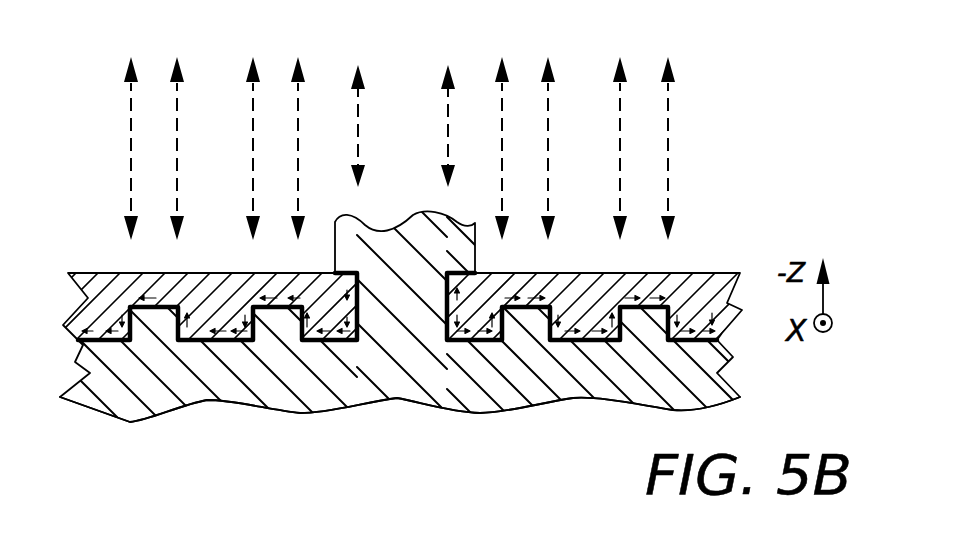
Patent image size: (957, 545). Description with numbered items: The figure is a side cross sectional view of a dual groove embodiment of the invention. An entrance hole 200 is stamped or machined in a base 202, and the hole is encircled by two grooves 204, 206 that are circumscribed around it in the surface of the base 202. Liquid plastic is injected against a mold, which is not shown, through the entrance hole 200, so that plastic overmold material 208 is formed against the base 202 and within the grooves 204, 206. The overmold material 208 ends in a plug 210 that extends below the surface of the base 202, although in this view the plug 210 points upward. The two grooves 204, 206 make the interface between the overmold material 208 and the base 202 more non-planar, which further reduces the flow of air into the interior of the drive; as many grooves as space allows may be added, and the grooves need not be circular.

The entrance hole 200 is at (362, 326).
The base 202 is at (697, 282).
The groove 204 is at (167, 300).
The groove 206 is at (290, 318).
The plastic overmold material 208 is at (582, 400).
The plug 210 is at (395, 222).